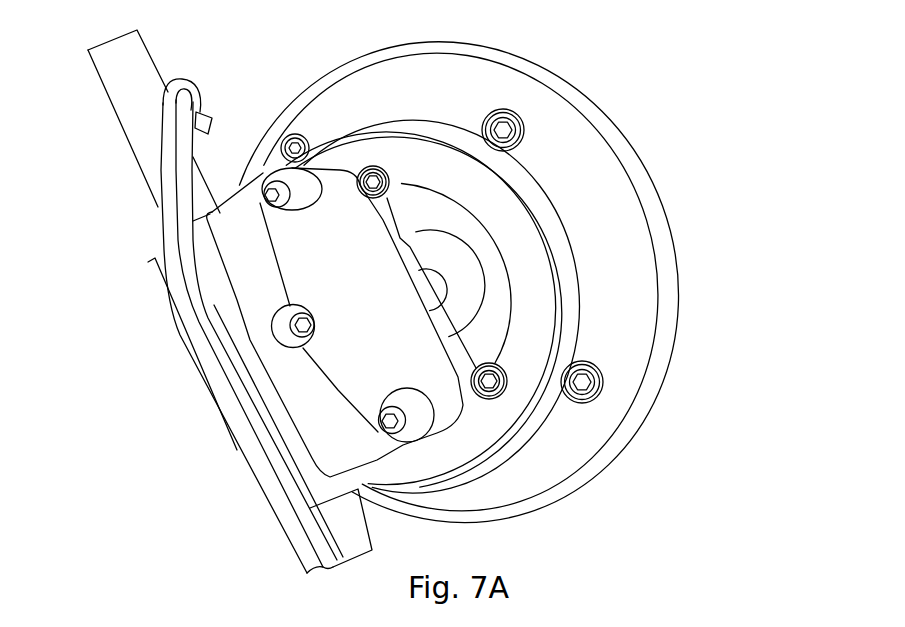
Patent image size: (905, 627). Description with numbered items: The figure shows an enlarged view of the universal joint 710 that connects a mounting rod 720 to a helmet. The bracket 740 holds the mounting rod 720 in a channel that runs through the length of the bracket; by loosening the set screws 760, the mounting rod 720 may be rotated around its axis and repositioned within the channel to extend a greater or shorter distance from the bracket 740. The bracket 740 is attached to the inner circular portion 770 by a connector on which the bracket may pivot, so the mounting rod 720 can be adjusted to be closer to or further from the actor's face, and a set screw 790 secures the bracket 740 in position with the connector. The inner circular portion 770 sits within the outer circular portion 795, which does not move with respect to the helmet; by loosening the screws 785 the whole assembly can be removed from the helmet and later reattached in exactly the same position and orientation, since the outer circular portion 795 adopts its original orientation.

The universal joint 710 is at (592, 518).
The mounting rod 720 is at (127, 97).
The bracket 740 is at (237, 217).
The set screws 760 is at (276, 192).
The inner circular portion 770 is at (532, 338).
The screws 785 is at (523, 137).
The set screw 790 is at (302, 330).
The outer circular portion 795 is at (630, 240).